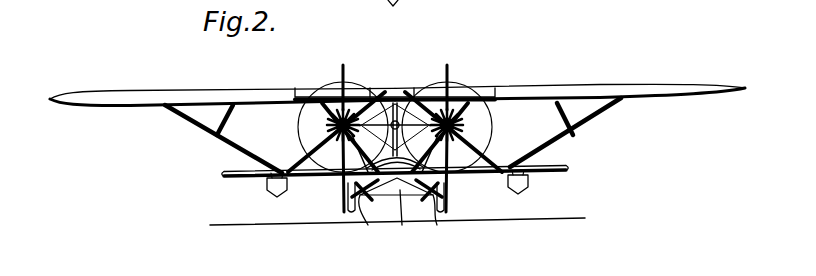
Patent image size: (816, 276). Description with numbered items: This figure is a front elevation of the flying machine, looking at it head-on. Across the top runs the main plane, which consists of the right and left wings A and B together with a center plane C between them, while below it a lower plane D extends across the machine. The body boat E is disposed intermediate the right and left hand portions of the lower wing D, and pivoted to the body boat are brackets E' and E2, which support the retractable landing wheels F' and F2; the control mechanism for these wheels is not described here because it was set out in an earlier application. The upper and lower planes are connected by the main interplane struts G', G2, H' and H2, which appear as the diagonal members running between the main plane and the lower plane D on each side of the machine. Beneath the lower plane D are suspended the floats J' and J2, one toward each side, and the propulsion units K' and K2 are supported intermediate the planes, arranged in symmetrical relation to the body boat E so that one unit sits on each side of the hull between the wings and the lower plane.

The right wing A is at (93, 90).
The left wing B is at (607, 82).
The center plane C is at (405, 84).
The propulsion unit K' is at (345, 113).
The propulsion unit K2 is at (481, 92).
The main interplane strut H' is at (321, 132).
The main interplane strut H2 is at (500, 162).
The main interplane strut G' is at (223, 139).
The main interplane strut G2 is at (568, 140).
The lower plane D is at (322, 178).
The float J' is at (259, 192).
The float J2 is at (528, 188).
The body boat E is at (397, 217).
The bracket E' is at (359, 227).
The bracket E2 is at (434, 219).
The retractable landing wheel F' is at (335, 195).
The retractable landing wheel F2 is at (444, 213).